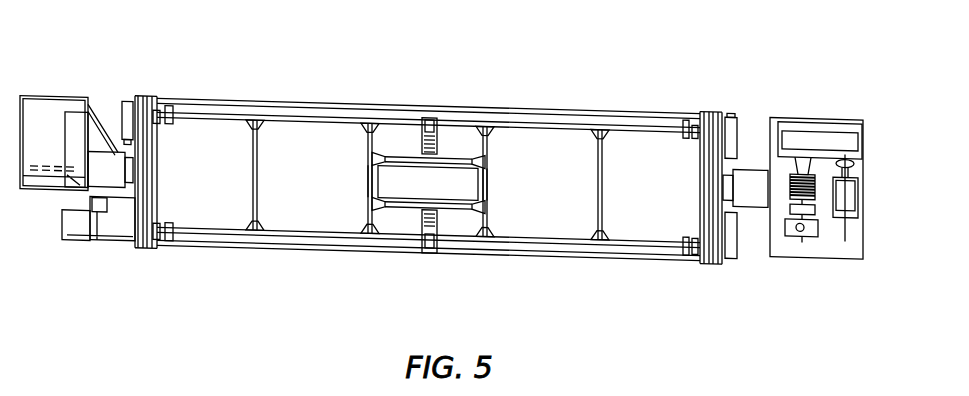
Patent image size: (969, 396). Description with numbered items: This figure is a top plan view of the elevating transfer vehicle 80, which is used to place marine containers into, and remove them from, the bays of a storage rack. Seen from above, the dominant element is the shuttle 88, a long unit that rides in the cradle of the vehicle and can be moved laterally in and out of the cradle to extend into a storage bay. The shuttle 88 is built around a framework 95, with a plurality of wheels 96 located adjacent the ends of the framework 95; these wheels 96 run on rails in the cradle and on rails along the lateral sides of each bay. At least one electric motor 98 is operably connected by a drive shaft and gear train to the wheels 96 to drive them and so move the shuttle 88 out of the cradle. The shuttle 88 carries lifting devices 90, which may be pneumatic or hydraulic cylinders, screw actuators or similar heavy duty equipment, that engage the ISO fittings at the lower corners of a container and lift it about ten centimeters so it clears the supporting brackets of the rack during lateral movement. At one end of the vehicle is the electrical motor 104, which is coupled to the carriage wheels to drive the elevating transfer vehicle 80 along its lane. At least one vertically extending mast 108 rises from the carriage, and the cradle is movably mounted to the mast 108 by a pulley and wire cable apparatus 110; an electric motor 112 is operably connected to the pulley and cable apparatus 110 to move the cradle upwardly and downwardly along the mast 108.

The elevating transfer vehicle 80 is at (592, 106).
The shuttle 88 is at (220, 98).
The lifting devices 90 is at (153, 98).
The framework 95 is at (310, 102).
The wheels 96 is at (143, 98).
The electric motor 98 is at (430, 118).
The electrical motor 104 is at (48, 118).
The mast 108 is at (100, 160).
The pulley and wire cable apparatus 110 is at (815, 193).
The electric motor 112 is at (863, 207).